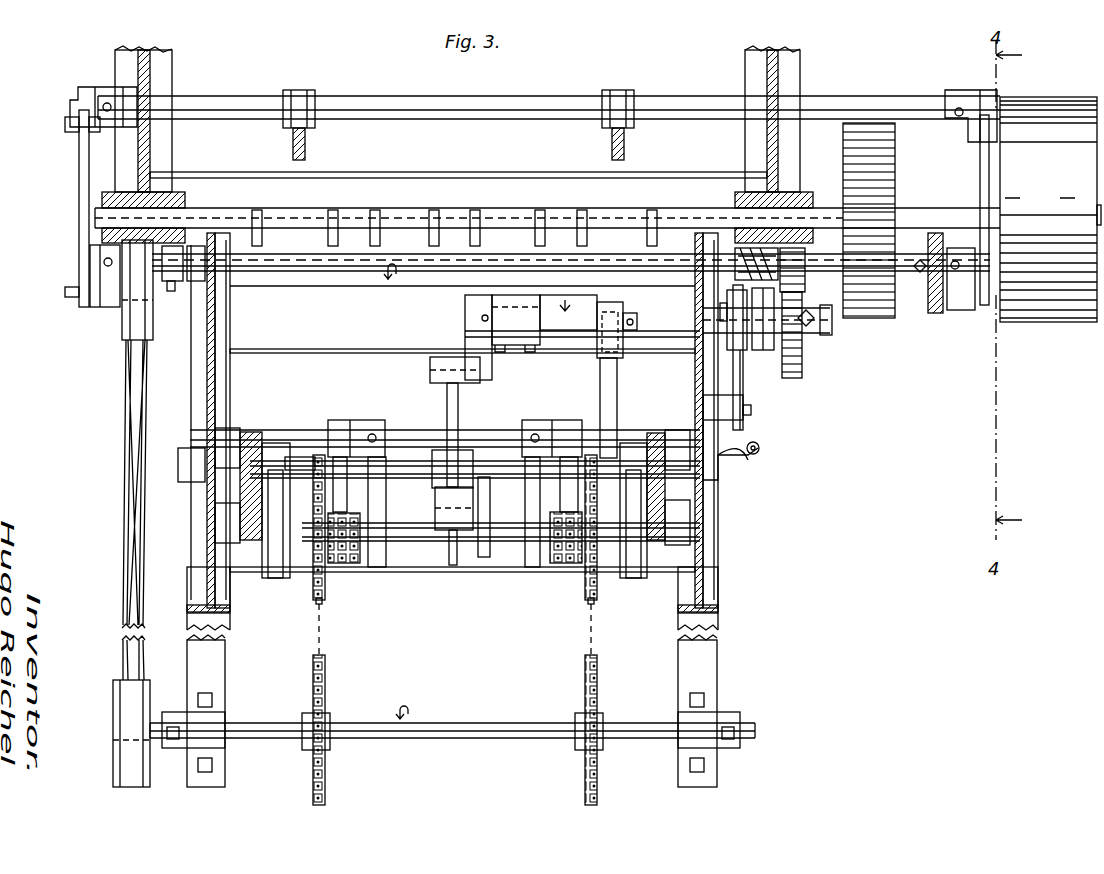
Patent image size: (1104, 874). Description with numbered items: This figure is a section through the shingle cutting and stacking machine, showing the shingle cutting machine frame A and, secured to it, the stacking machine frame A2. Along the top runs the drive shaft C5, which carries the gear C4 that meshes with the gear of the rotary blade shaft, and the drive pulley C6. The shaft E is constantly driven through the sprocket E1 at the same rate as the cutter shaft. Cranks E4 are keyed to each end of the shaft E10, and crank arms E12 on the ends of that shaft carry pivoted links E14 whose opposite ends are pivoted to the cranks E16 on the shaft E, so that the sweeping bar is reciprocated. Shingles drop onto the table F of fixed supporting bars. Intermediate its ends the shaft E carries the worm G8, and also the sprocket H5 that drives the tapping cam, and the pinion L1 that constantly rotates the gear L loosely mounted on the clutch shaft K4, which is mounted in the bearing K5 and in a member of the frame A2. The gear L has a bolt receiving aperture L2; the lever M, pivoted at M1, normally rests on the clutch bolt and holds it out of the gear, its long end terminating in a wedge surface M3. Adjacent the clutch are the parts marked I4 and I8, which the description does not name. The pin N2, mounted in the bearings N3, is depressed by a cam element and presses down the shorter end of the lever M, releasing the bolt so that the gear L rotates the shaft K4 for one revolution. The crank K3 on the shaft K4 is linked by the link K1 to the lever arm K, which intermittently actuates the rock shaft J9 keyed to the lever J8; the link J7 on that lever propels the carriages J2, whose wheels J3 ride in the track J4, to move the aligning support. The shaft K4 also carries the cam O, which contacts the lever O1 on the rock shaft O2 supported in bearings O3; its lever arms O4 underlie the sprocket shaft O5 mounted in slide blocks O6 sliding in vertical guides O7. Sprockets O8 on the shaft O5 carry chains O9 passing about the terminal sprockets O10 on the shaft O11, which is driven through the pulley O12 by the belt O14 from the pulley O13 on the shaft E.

The shingle cutting machine frame A is at (163, 62).
The stacking machine frame A2 is at (203, 362).
The shaft E is at (571, 291).
The sprocket E1 is at (933, 312).
The cranks E4 is at (306, 145).
The shaft E10 is at (418, 100).
The crank arms E12 is at (80, 96).
The links E14 is at (79, 173).
The cranks E16 is at (95, 307).
The gear C4 is at (895, 148).
The drive shaft C5 is at (402, 213).
The drive pulley C6 is at (1050, 209).
The worm G8 is at (748, 260).
The table F is at (328, 240).
The sprocket H5 is at (171, 291).
The collar I4 is at (763, 338).
The clutch member I8 is at (727, 320).
The gear L is at (800, 378).
The pinion L1 is at (795, 278).
The bolt receiving aperture L2 is at (777, 320).
The lever M is at (743, 383).
The pivot M1 is at (751, 412).
The wedge surface M3 is at (733, 320).
The pin N2 is at (760, 445).
The bearings N3 is at (740, 458).
The lever arm K is at (440, 500).
The link K1 is at (448, 402).
The crank K3 is at (473, 340).
The clutch shaft K4 is at (583, 313).
The bearing K5 is at (527, 303).
The carriage J2 is at (250, 432).
The wheels J3 is at (218, 436).
The track J4 is at (222, 378).
The link J7 is at (276, 580).
The lever J8 is at (270, 447).
The rock shaft J9 is at (302, 457).
The cam O is at (612, 350).
The lever O1 is at (608, 392).
The rock shaft O2 is at (410, 433).
The bearings O3 is at (347, 422).
The lever arms O4 is at (378, 485).
The sprocket shaft O5 is at (482, 560).
The slide blocks O6 is at (338, 565).
The vertical guides O7 is at (326, 560).
The sprockets O8 is at (323, 602).
The chains O9 is at (322, 640).
The terminal sprockets O10 is at (327, 775).
The shaft O11 is at (502, 740).
The pulley O12 is at (115, 687).
The pulley O13 is at (123, 300).
The belt O14 is at (135, 405).